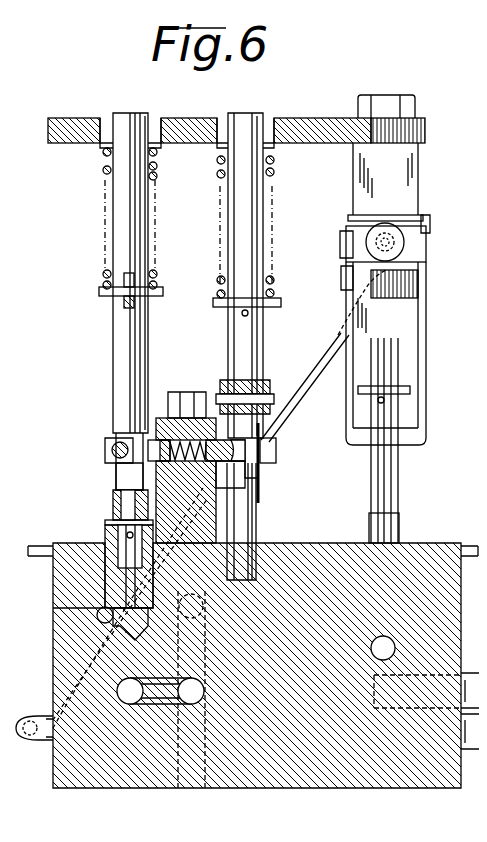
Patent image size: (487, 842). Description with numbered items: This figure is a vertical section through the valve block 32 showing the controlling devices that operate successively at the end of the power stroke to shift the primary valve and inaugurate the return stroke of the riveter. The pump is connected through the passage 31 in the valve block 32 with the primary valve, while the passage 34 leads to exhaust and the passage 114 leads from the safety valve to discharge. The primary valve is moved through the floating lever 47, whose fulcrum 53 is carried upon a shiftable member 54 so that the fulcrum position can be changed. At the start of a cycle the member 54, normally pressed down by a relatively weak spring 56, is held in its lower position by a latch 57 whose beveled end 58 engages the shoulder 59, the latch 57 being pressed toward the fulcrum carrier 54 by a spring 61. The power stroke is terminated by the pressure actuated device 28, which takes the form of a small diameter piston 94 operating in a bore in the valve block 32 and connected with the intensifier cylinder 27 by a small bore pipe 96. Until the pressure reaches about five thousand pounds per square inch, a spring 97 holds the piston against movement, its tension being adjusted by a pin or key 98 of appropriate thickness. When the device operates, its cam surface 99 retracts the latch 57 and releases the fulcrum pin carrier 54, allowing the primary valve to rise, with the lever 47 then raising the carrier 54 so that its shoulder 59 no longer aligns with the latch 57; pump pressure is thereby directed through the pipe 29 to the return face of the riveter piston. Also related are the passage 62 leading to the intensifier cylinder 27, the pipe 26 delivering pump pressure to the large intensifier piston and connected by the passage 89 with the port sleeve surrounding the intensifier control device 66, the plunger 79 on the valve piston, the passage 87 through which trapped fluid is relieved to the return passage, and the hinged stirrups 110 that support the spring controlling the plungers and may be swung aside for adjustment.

The pressure actuated device 28 is at (119, 101).
The shiftable member 54 is at (238, 101).
The spring 56 is at (265, 174).
The spring 97 is at (95, 162).
The pin or key 98 is at (118, 288).
The hinged stirrups 110 is at (400, 258).
The plunger 79 is at (388, 456).
The intensifier control device 66 is at (401, 521).
The passage 87 is at (341, 346).
The floating lever 47 is at (260, 378).
The fulcrum 53 is at (262, 396).
The spring 61 is at (180, 390).
The beveled end 58 is at (268, 442).
The shoulder 59 is at (250, 460).
The latch 57 is at (98, 430).
The cam surface 99 is at (108, 460).
The small diameter piston 94 is at (105, 585).
The small bore pipe 96 is at (90, 606).
The valve block 32 is at (305, 552).
The passage 34 is at (195, 780).
The passage 31 is at (186, 683).
The passage 114 is at (122, 692).
The passage 62 is at (382, 640).
The passage 89 is at (378, 700).
The pipe 26 is at (462, 672).
The pipe 29 is at (461, 742).
The cylinder 27 is at (20, 728).